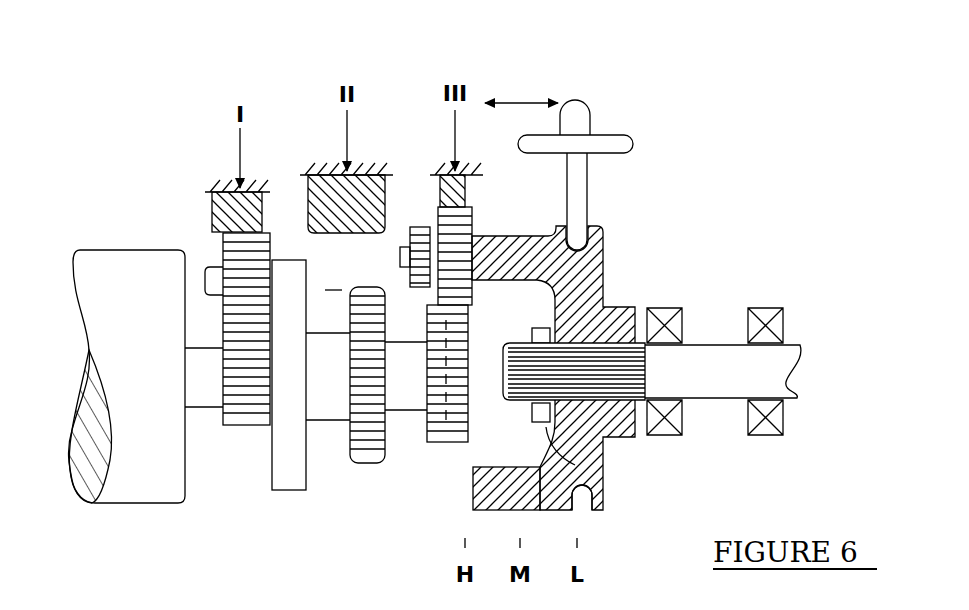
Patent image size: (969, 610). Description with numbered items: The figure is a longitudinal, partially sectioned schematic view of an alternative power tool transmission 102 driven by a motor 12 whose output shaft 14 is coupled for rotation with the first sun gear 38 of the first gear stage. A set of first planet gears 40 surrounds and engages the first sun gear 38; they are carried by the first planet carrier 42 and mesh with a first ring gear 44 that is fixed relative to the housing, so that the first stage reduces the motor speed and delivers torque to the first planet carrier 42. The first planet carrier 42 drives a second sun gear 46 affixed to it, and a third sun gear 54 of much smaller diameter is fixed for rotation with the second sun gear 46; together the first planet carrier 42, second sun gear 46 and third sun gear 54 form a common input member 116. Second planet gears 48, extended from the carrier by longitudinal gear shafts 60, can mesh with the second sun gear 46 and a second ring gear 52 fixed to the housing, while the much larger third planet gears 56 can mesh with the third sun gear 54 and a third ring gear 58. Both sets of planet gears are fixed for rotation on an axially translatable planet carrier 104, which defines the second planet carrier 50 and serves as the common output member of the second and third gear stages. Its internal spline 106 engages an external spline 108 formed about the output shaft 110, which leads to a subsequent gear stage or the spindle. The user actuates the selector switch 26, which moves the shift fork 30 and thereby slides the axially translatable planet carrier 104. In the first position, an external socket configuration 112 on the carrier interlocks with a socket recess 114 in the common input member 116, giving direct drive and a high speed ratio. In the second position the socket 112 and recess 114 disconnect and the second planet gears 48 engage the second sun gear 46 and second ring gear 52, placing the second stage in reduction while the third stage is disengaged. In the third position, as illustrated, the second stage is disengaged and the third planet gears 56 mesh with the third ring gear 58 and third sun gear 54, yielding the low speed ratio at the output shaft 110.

The motor 12 is at (92, 250).
The output shaft 14 is at (200, 410).
The selector switch 26 is at (590, 108).
The shift fork 30 is at (587, 172).
The first sun gear 38 is at (257, 427).
The first planet gears 40 is at (220, 258).
The first planet carrier 42 is at (290, 492).
The first ring gear 44 is at (213, 218).
The second sun gear 46 is at (365, 465).
The second planet gears 48 is at (420, 227).
The second planet carrier 50 is at (532, 510).
The second ring gear 52 is at (308, 195).
The third sun gear 54 is at (440, 444).
The third planet gears 56 is at (473, 225).
The third ring gear 58 is at (437, 220).
The gear shafts 60 is at (400, 253).
The power tool transmission 102 is at (595, 71).
The axially translatable planet carrier 104 is at (606, 262).
The internal spline 106 is at (613, 345).
The external spline 108 is at (520, 402).
The output shaft 110 is at (717, 402).
The external socket configuration 112 is at (560, 457).
The socket recess 114 is at (468, 410).
The common input member 116 is at (332, 426).